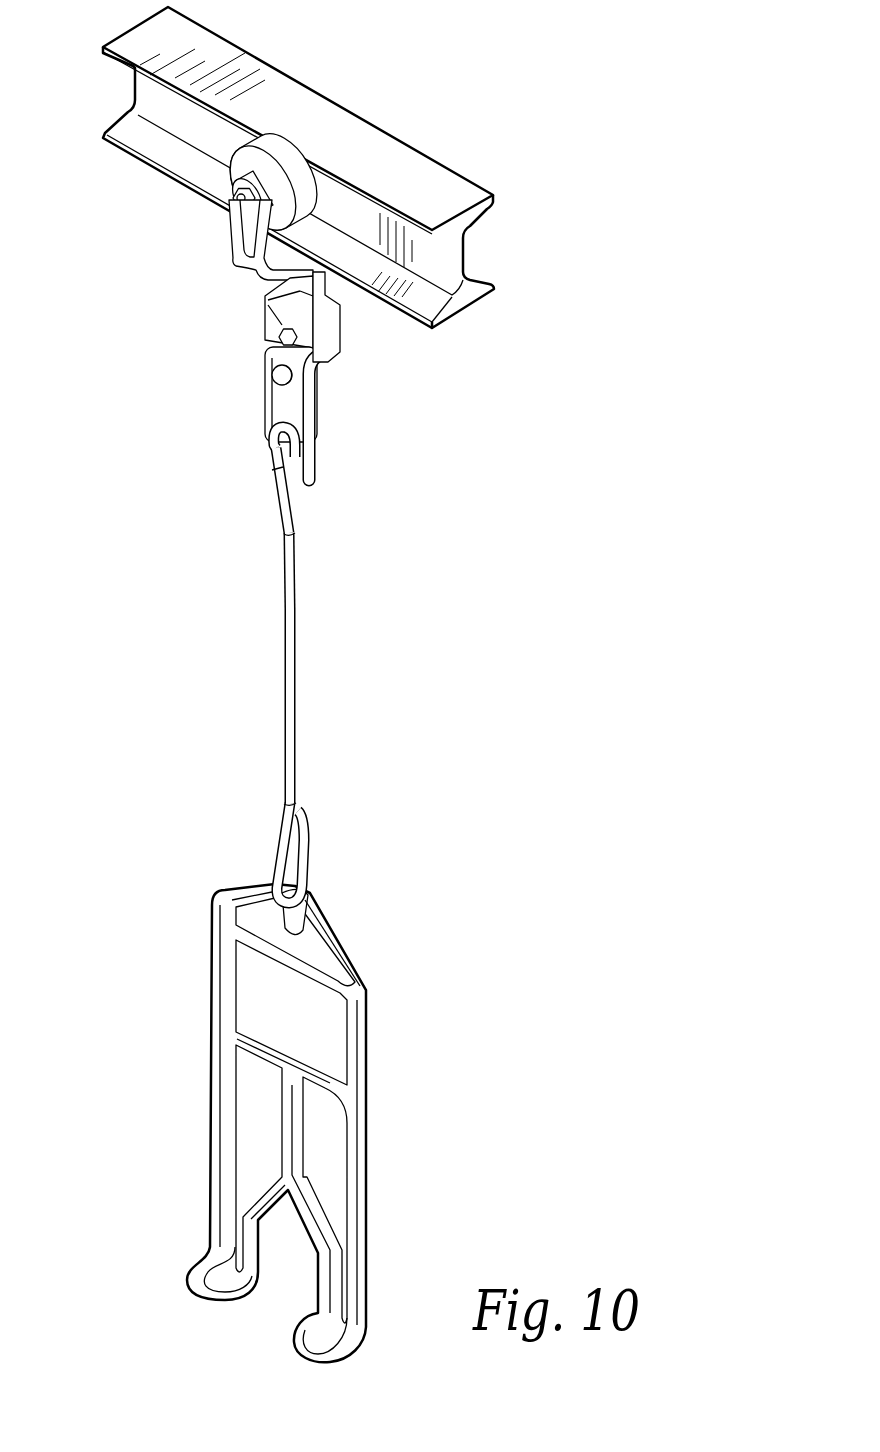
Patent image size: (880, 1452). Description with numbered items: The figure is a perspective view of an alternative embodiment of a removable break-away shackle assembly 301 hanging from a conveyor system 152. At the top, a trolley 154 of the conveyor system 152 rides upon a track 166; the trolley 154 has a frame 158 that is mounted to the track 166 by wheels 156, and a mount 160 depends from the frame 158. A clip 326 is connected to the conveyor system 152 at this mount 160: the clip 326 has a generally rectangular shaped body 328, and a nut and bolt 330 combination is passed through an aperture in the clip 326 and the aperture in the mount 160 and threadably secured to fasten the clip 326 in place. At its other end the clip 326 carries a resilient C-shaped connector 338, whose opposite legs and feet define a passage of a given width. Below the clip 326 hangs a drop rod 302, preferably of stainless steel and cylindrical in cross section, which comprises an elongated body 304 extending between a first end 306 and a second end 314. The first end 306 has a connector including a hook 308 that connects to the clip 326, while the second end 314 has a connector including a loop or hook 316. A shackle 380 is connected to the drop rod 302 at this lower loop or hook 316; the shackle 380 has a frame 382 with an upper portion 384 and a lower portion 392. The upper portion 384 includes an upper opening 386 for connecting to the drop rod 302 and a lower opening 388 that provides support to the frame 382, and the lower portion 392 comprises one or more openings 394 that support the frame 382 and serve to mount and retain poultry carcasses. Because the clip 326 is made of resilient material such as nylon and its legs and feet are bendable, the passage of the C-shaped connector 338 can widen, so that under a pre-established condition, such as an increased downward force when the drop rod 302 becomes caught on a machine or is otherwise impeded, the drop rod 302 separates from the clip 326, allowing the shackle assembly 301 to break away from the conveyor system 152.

The conveyor system 152 is at (273, 263).
The trolley 154 is at (340, 342).
The wheels 156 is at (303, 162).
The frame 158 is at (230, 248).
The mount 160 is at (322, 362).
The track 166 is at (417, 148).
The removable break-away shackle assembly 301 is at (335, 894).
The drop rod 302 is at (256, 665).
The elongated body 304 is at (296, 692).
The first end 306 is at (297, 537).
The hook 308 is at (275, 503).
The second end 314 is at (296, 800).
The loop or hook 316 is at (277, 853).
The clip 326 is at (268, 440).
The generally rectangular shaped body 328 is at (268, 407).
The nut and bolt 330 is at (268, 372).
The resilient C-shaped connector 338 is at (316, 456).
The shackle 380 is at (335, 1116).
The frame 382 is at (213, 918).
The upper portion 384 is at (368, 993).
The upper opening 386 is at (325, 952).
The lower opening 388 is at (235, 996).
The lower portion 392 is at (368, 1085).
The openings 394 is at (228, 1143).